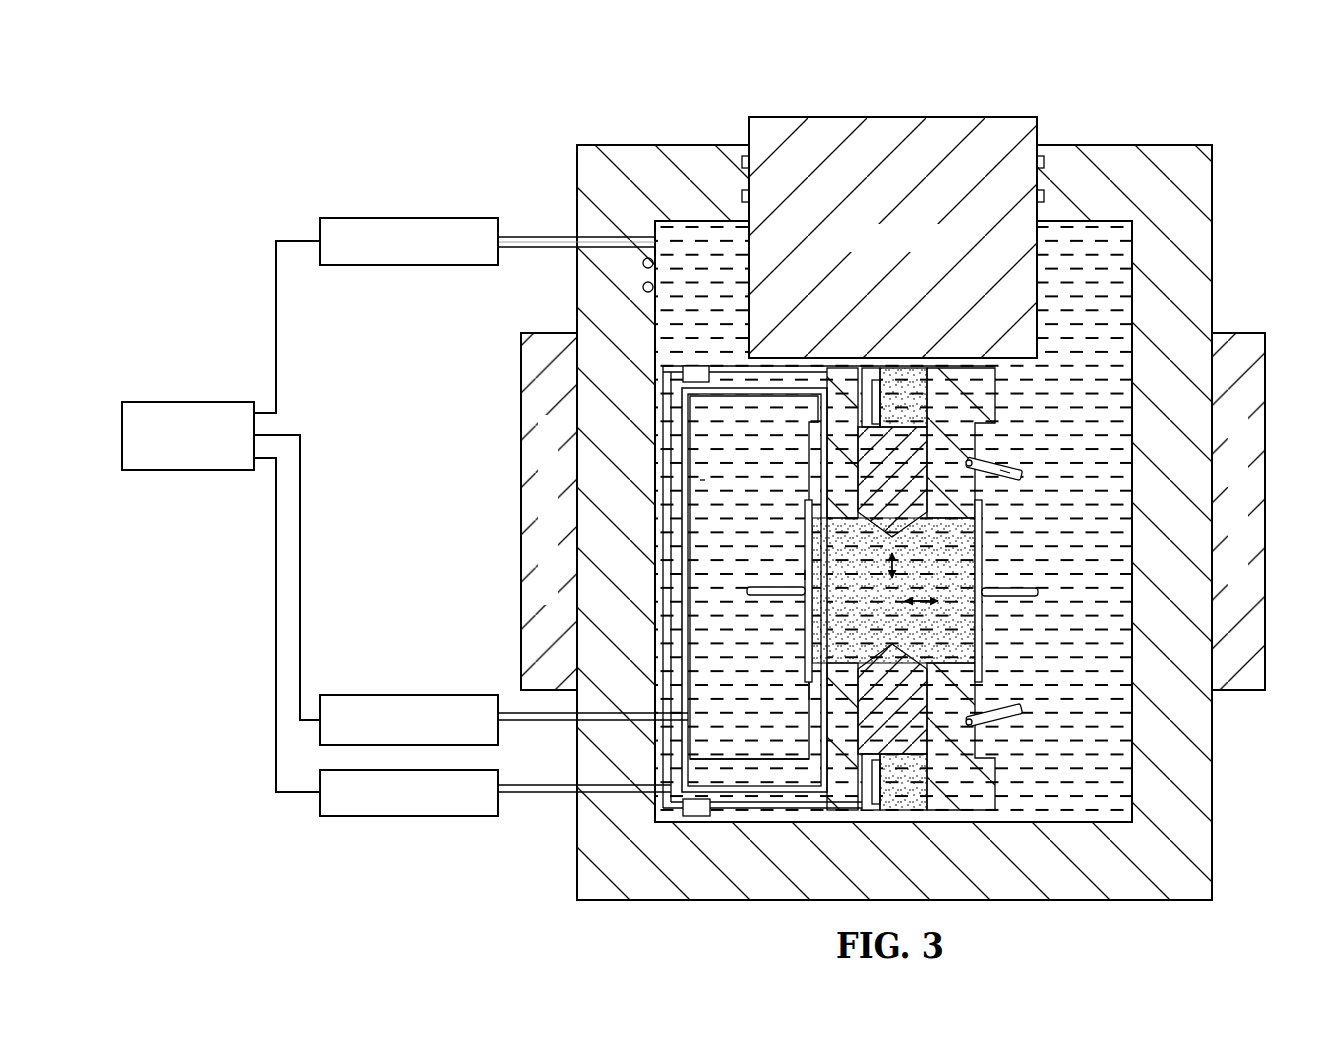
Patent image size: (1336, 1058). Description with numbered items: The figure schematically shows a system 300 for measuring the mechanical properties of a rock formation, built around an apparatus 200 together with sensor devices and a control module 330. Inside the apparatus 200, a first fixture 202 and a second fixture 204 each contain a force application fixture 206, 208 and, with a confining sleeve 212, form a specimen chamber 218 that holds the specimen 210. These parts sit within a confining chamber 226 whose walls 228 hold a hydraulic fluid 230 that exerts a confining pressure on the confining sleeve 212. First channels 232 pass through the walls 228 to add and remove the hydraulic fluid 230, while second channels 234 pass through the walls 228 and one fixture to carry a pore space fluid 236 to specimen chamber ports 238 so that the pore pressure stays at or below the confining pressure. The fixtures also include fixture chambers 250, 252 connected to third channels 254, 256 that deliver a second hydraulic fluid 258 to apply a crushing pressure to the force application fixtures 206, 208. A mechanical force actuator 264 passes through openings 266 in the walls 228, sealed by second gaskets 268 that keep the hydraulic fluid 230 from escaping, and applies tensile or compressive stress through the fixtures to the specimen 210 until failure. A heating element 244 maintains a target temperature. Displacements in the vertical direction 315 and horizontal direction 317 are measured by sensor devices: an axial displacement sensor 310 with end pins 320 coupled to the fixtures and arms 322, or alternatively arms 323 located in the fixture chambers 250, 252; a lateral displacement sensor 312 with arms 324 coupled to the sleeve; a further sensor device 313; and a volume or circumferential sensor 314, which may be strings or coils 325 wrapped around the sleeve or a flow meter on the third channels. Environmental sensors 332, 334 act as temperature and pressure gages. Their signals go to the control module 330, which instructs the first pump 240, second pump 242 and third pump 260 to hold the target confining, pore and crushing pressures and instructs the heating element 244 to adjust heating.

The apparatus 200 is at (487, 97).
The system 300 is at (255, 103).
The first fixture 202 is at (790, 421).
The second fixture 204 is at (786, 770).
The force application fixture 206 is at (872, 474).
The force application fixture 208 is at (872, 736).
The specimen 210 is at (830, 597).
The confining sleeve 212 is at (805, 674).
The specimen chamber 218 is at (804, 573).
The confining chamber 226 is at (1142, 778).
The walls 228 is at (620, 148).
The hydraulic fluid 230 is at (545, 250).
The first channels 232 is at (530, 236).
The second channels 234 is at (545, 728).
The pore space fluid 236 is at (805, 465).
The specimen chamber ports 238 is at (806, 524).
The first pump 240 is at (412, 218).
The second pump 242 is at (412, 695).
The heating element 244 is at (528, 372).
The fixture chamber 250 is at (996, 410).
The fixture chamber 252 is at (910, 797).
The third channel 254 is at (740, 366).
The third channel 256 is at (760, 820).
The second hydraulic fluid 258 is at (665, 476).
The third pump 260 is at (412, 817).
The mechanical force actuator 264 is at (952, 118).
The openings 266 is at (740, 142).
The second gaskets 268 is at (1047, 160).
The axial displacement sensor 310 is at (1066, 352).
The lateral displacement sensor 312 is at (1062, 558).
The sensor device 313 is at (1060, 710).
The volume displacement sensor 314 is at (695, 364).
The vertical direction 315 is at (886, 568).
The horizontal direction 317 is at (927, 599).
The end pins 320 is at (982, 461).
The arms 322 is at (1025, 475).
The arms 323 is at (905, 388).
The arms 324 is at (780, 596).
The strings or coils 325 is at (996, 638).
The control module 330 is at (190, 402).
The environmental sensors 332 is at (660, 266).
The environmental sensors 334 is at (660, 288).